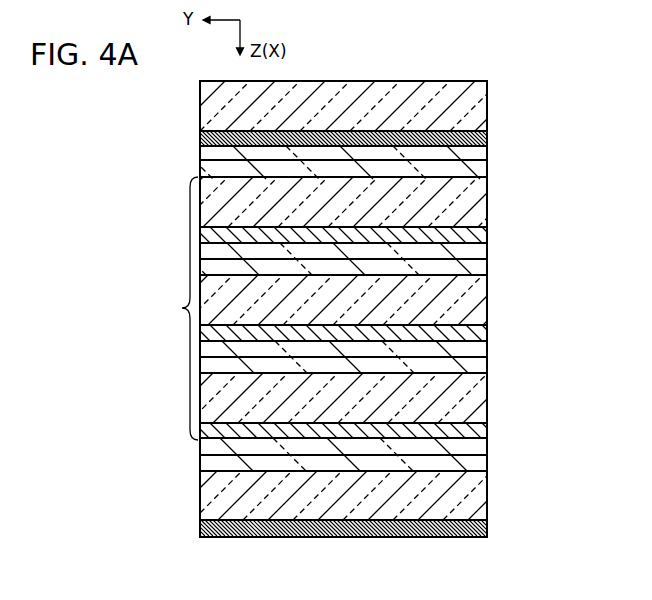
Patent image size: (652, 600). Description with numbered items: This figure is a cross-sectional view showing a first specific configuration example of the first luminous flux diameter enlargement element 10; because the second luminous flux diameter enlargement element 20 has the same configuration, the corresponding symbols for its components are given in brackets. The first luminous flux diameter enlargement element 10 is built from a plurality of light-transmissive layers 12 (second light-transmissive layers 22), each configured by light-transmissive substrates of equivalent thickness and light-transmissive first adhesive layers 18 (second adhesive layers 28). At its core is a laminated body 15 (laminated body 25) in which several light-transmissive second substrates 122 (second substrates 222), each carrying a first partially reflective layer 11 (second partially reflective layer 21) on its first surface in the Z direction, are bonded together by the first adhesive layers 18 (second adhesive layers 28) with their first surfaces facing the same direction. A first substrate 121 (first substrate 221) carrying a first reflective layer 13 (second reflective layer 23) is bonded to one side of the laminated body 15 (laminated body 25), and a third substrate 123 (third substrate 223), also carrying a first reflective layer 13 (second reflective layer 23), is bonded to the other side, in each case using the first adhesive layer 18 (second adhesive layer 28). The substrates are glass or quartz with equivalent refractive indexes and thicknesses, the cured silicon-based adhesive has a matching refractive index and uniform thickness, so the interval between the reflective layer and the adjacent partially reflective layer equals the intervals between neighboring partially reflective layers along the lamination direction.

The first luminous flux diameter enlargement element 10 is at (343, 275).
The second luminous flux diameter enlargement element 20 is at (301, 78).
The first partially reflective layer 11 is at (346, 257).
The second partially reflective layer 21 is at (399, 463).
The light-transmissive layer 12 is at (361, 297).
The second light-transmissive layer 22 is at (361, 297).
The first adhesive layer 18 is at (328, 240).
The second adhesive layer 28 is at (416, 455).
The first reflective layer 13 is at (317, 324).
The second reflective layer 23 is at (201, 138).
The laminated body 15 is at (311, 316).
The laminated body 25 is at (311, 316).
The third substrate 123 is at (363, 126).
The third substrate 223 is at (479, 101).
The second substrate 122 is at (361, 321).
The second substrate 222 is at (478, 203).
The first substrate 121 is at (355, 528).
The first substrate 221 is at (292, 496).